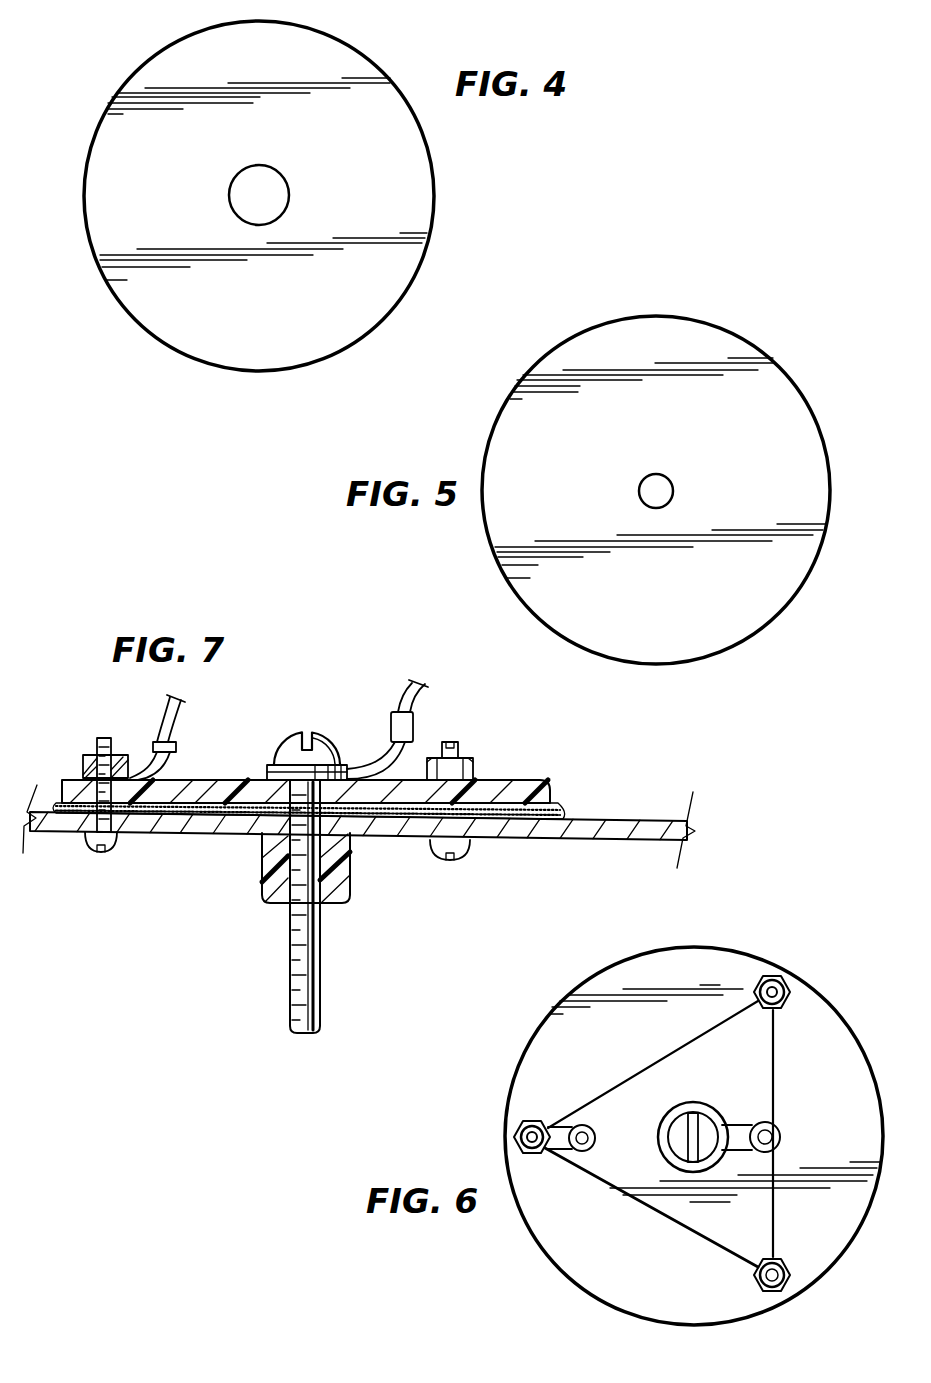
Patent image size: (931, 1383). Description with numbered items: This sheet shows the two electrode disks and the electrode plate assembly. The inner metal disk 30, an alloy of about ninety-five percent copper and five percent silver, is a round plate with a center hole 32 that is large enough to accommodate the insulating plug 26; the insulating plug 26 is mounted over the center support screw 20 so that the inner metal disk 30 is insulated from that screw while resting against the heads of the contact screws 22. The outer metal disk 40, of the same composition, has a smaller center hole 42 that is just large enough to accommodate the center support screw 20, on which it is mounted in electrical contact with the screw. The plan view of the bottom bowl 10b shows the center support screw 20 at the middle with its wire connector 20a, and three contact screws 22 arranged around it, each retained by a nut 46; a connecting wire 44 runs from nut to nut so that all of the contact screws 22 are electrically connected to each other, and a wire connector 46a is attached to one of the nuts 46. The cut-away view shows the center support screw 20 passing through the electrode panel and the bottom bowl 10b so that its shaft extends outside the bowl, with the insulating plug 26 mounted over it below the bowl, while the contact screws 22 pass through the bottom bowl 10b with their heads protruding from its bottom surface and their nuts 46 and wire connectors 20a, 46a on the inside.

In FIG. 4, the inner metal disk 30 is at (285, 196).
In FIG. 4, the center hole 32 is at (276, 183).
In FIG. 5, the outer metal disk 40 is at (683, 490).
In FIG. 5, the center hole 42 is at (680, 491).
In FIG. 7, the bottom bowl 10b is at (359, 818).
In FIG. 6, the bottom bowl 10b is at (694, 1125).
In FIG. 7, the center support screw 20 is at (313, 865).
In FIG. 7, the wire connector 20a is at (411, 729).
In FIG. 6, the wire connector 20a is at (719, 1118).
In FIG. 7, the contact screws 22 is at (297, 790).
In FIG. 6, the contact screws 22 is at (645, 1133).
In FIG. 7, the insulating plug 26 is at (332, 868).
In FIG. 6, the connecting wire 44 is at (686, 1134).
In FIG. 7, the nuts 46 is at (276, 757).
In FIG. 6, the nuts 46 is at (652, 1132).
In FIG. 7, the wire connector 46a is at (180, 737).
In FIG. 6, the wire connector 46a is at (594, 1151).